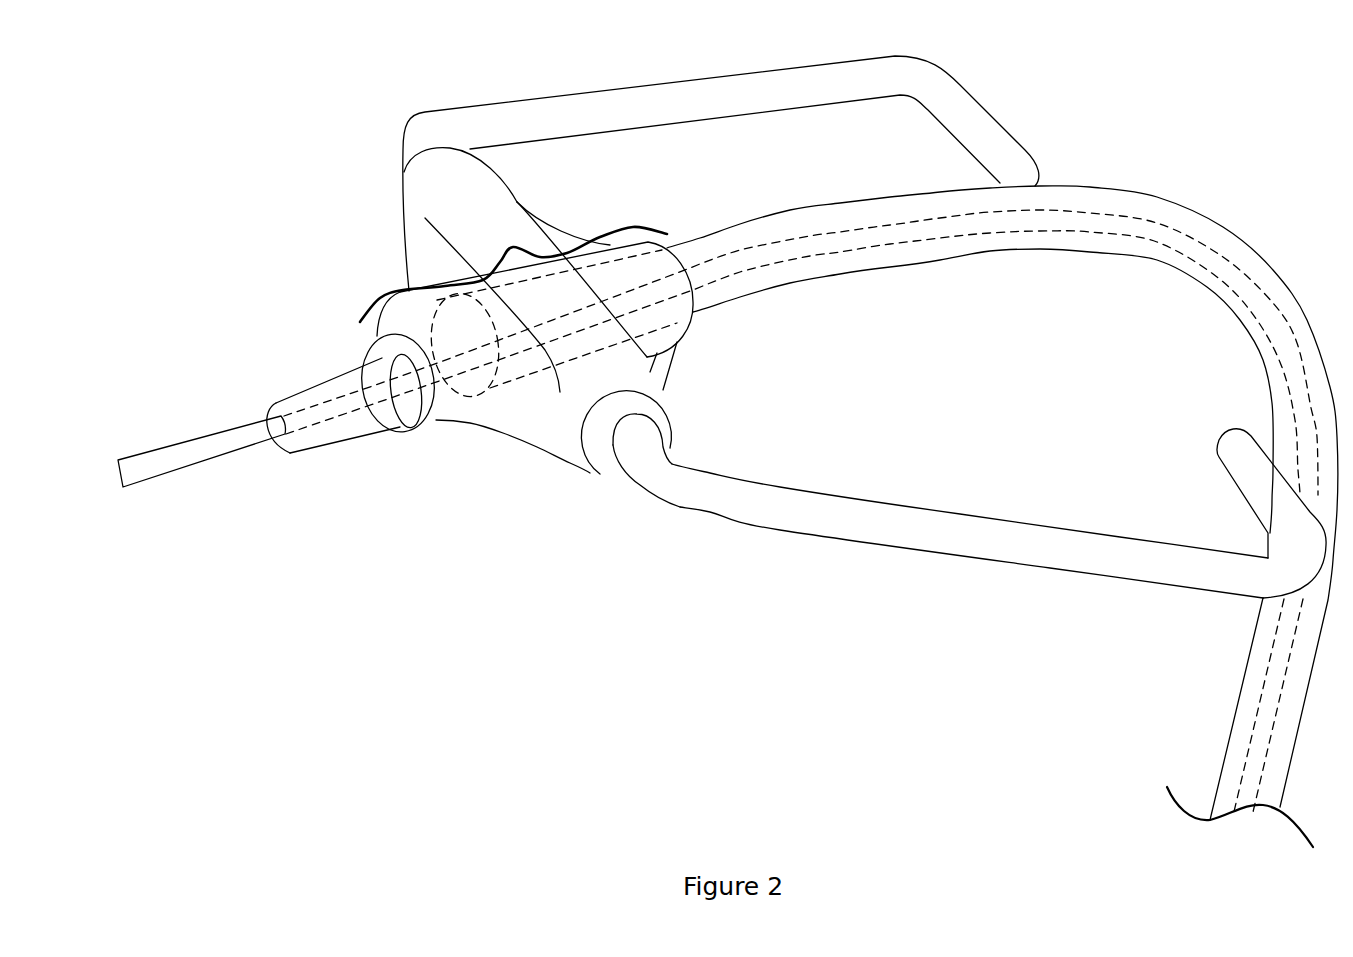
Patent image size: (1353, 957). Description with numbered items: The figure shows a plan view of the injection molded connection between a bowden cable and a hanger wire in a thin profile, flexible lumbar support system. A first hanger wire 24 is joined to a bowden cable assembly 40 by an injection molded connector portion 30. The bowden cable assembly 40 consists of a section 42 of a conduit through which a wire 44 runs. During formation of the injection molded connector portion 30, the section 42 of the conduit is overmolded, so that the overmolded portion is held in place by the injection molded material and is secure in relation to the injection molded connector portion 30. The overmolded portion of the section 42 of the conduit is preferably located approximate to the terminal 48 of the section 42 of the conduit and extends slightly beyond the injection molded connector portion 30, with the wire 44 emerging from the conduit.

The first hanger wire 24 is at (1003, 518).
The injection molded connector portion 30 is at (373, 290).
The bowden cable assembly 40 is at (1158, 193).
The section of a conduit 42 is at (546, 304).
The wire 44 is at (200, 430).
The terminal of the section of a conduit 48 is at (502, 403).